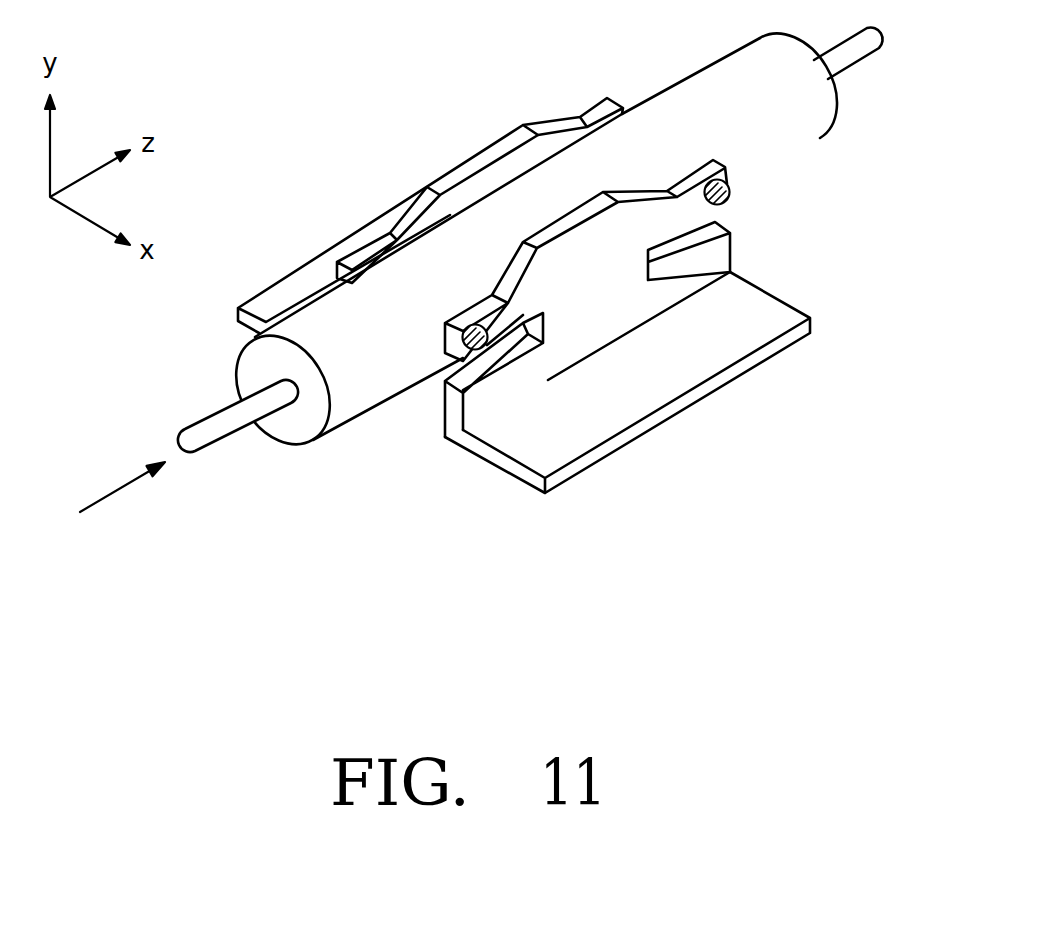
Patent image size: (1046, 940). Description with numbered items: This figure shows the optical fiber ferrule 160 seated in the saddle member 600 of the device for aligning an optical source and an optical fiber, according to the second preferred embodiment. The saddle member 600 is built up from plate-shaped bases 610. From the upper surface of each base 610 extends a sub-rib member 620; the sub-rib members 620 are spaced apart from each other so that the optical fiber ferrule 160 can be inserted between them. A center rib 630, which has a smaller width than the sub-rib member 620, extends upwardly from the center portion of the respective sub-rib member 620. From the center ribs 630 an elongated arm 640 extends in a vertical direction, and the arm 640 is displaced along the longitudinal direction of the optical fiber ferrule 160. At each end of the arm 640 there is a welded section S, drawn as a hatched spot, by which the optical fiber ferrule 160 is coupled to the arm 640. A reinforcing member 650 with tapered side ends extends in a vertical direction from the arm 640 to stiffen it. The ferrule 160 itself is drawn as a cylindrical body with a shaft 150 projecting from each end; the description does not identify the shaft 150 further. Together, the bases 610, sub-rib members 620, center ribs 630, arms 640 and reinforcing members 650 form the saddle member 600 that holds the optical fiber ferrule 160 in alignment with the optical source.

The saddle member 600 is at (467, 116).
The plate-shaped base 610 is at (277, 300).
The sub-rib member 620 is at (697, 265).
The center rib 630 is at (603, 317).
The elongated arm 640 is at (505, 308).
The reinforcing member 650 is at (644, 216).
The welded section S is at (732, 193).
The shaft 150 is at (210, 417).
The optical fiber ferrule 160 is at (288, 430).